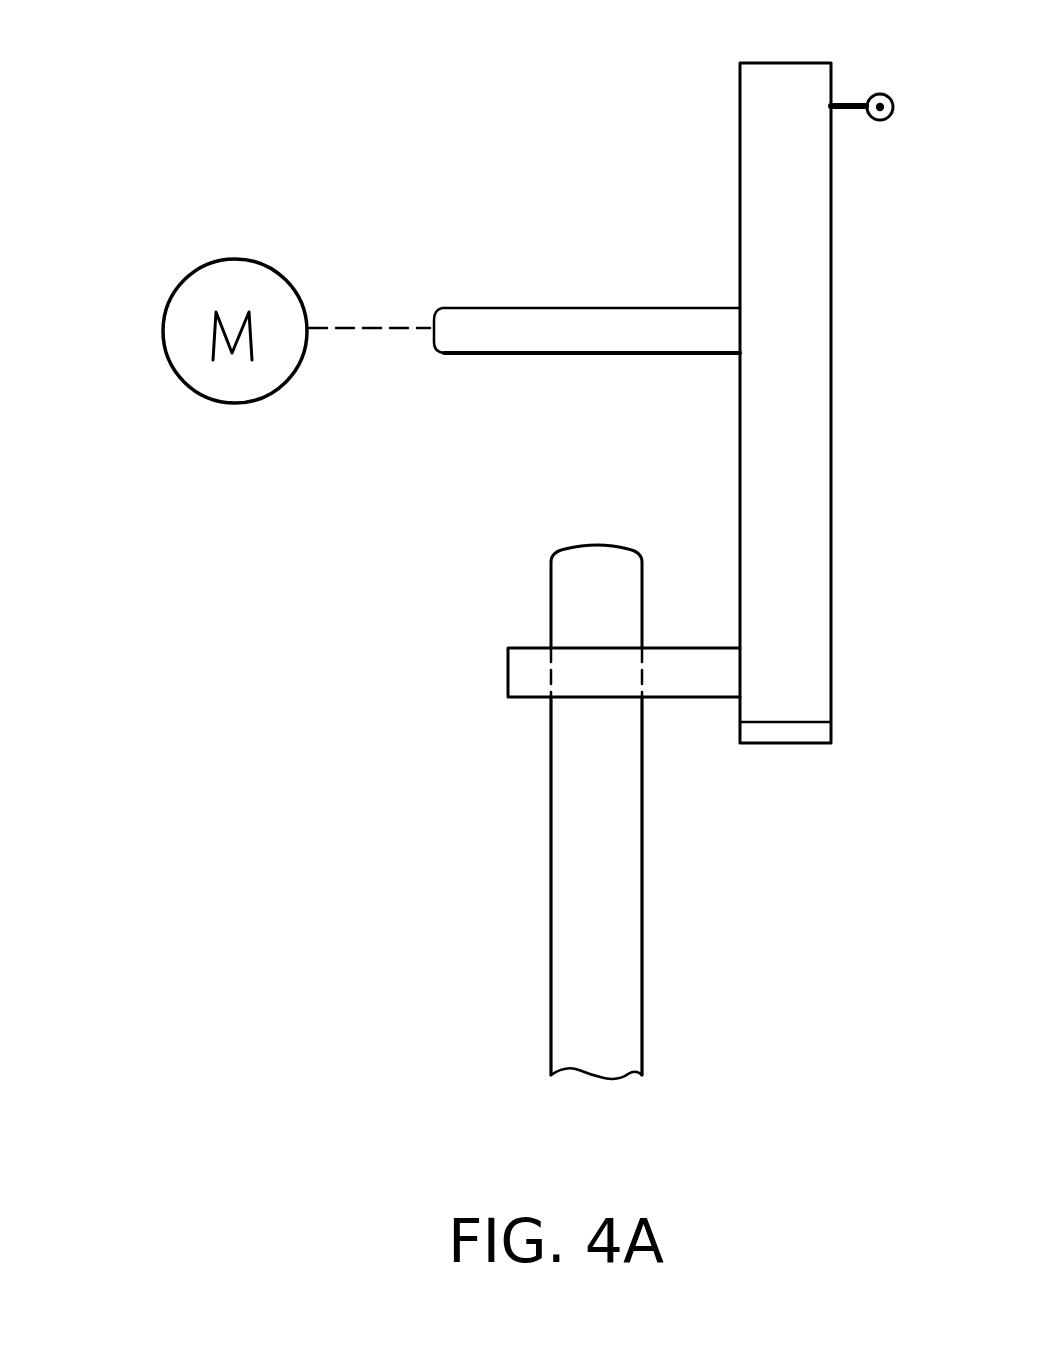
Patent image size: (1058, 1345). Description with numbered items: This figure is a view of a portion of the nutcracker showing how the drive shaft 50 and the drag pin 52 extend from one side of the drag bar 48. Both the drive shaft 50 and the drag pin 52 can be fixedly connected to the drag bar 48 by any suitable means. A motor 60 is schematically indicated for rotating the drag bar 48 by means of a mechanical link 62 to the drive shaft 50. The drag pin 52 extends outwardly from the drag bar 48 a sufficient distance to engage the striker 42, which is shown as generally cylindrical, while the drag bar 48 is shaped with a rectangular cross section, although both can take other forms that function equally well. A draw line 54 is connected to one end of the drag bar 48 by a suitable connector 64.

The striker 42 is at (548, 950).
The drag bar 48 is at (838, 434).
The drive shaft 50 is at (590, 308).
The drag pin 52 is at (500, 671).
The draw line 54 is at (889, 118).
The motor 60 is at (158, 331).
The mechanical link 62 is at (380, 327).
The connector 64 is at (853, 98).